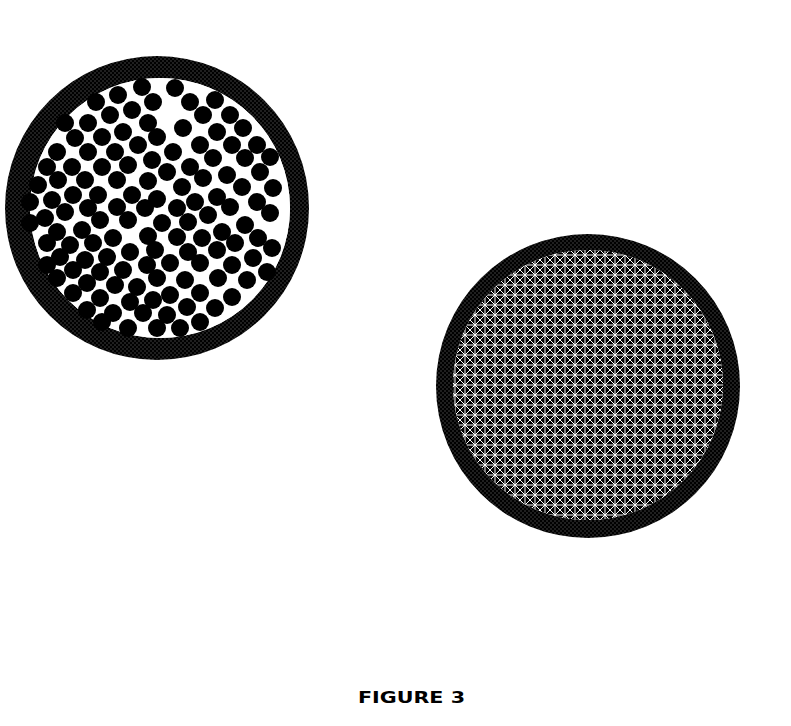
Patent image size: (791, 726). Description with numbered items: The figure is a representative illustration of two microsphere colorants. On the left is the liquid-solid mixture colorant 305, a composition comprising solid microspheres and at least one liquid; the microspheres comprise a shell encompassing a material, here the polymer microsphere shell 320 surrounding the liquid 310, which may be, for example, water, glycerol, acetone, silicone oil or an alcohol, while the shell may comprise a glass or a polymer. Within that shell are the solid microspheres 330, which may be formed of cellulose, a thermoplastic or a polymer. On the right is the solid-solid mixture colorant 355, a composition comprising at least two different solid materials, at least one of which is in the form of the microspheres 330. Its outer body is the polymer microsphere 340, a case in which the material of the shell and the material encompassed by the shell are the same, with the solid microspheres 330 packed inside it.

The liquid-solid microsphere colorant 305 is at (313, 244).
The liquid 310 is at (240, 143).
The polymer microsphere shell 320 is at (283, 158).
The microspheres 330 is at (457, 410).
The microsphere 340 is at (506, 241).
The solid-solid microsphere colorant 355 is at (561, 394).